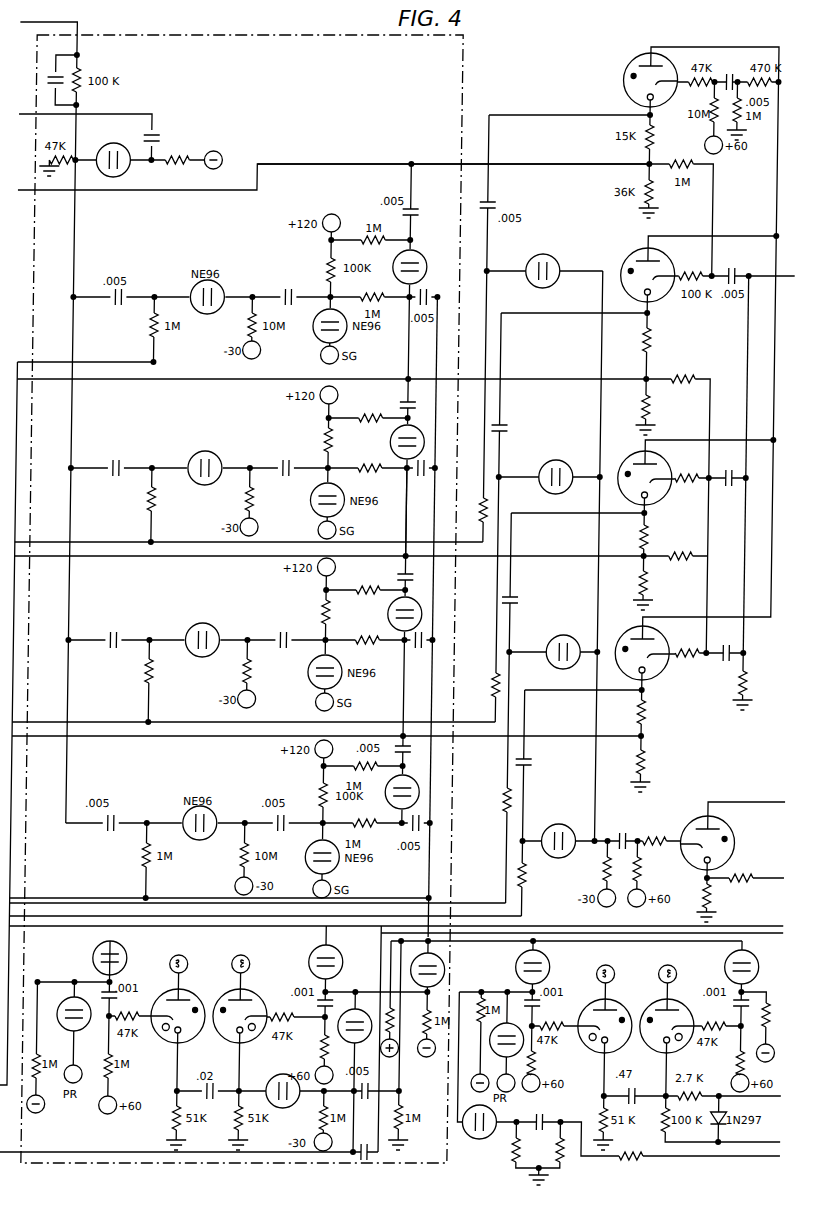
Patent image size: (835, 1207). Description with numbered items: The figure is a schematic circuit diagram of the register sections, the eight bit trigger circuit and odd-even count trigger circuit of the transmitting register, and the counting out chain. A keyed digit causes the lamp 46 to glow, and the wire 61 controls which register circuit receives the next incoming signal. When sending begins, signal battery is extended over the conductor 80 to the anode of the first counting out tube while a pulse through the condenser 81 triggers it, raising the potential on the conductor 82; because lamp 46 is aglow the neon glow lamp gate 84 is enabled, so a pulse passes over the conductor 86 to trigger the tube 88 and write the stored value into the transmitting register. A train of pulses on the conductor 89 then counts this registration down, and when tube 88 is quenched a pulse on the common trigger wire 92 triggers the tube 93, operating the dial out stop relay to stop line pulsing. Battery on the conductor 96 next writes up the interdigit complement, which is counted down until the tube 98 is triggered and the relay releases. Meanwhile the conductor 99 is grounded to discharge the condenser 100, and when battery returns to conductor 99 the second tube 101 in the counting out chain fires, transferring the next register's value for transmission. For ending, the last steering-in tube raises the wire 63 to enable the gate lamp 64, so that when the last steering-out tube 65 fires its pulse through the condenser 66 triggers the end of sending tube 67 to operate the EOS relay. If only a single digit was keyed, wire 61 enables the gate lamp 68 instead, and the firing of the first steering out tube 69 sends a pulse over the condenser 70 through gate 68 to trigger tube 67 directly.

The lamp 46 is at (308, 329).
The wire 61 is at (409, 549).
The wire 63 is at (349, 940).
The gate lamp 64 is at (580, 812).
The last tube of the steering out chain 65 is at (636, 632).
The condenser 66 is at (536, 766).
The end of sending tube 67 is at (726, 826).
The gate lamp 68 is at (552, 262).
The first steering out tube 69 is at (624, 72).
The condenser 70 is at (492, 205).
The conductor 80 is at (771, 204).
The condenser 81 is at (727, 72).
The conductor 82 is at (520, 164).
The neon glow lamp gate 84 is at (422, 255).
The conductor 86 is at (433, 333).
The tube 88 is at (238, 998).
The conductor 89 is at (535, 926).
The common trigger wire 92 is at (440, 1056).
The tube 93 is at (658, 1006).
The conductor 96 is at (386, 1152).
The tube 98 is at (596, 1006).
The conductor 99 is at (752, 282).
The condenser 100 is at (738, 262).
The second tube in the counting out chain 101 is at (668, 259).